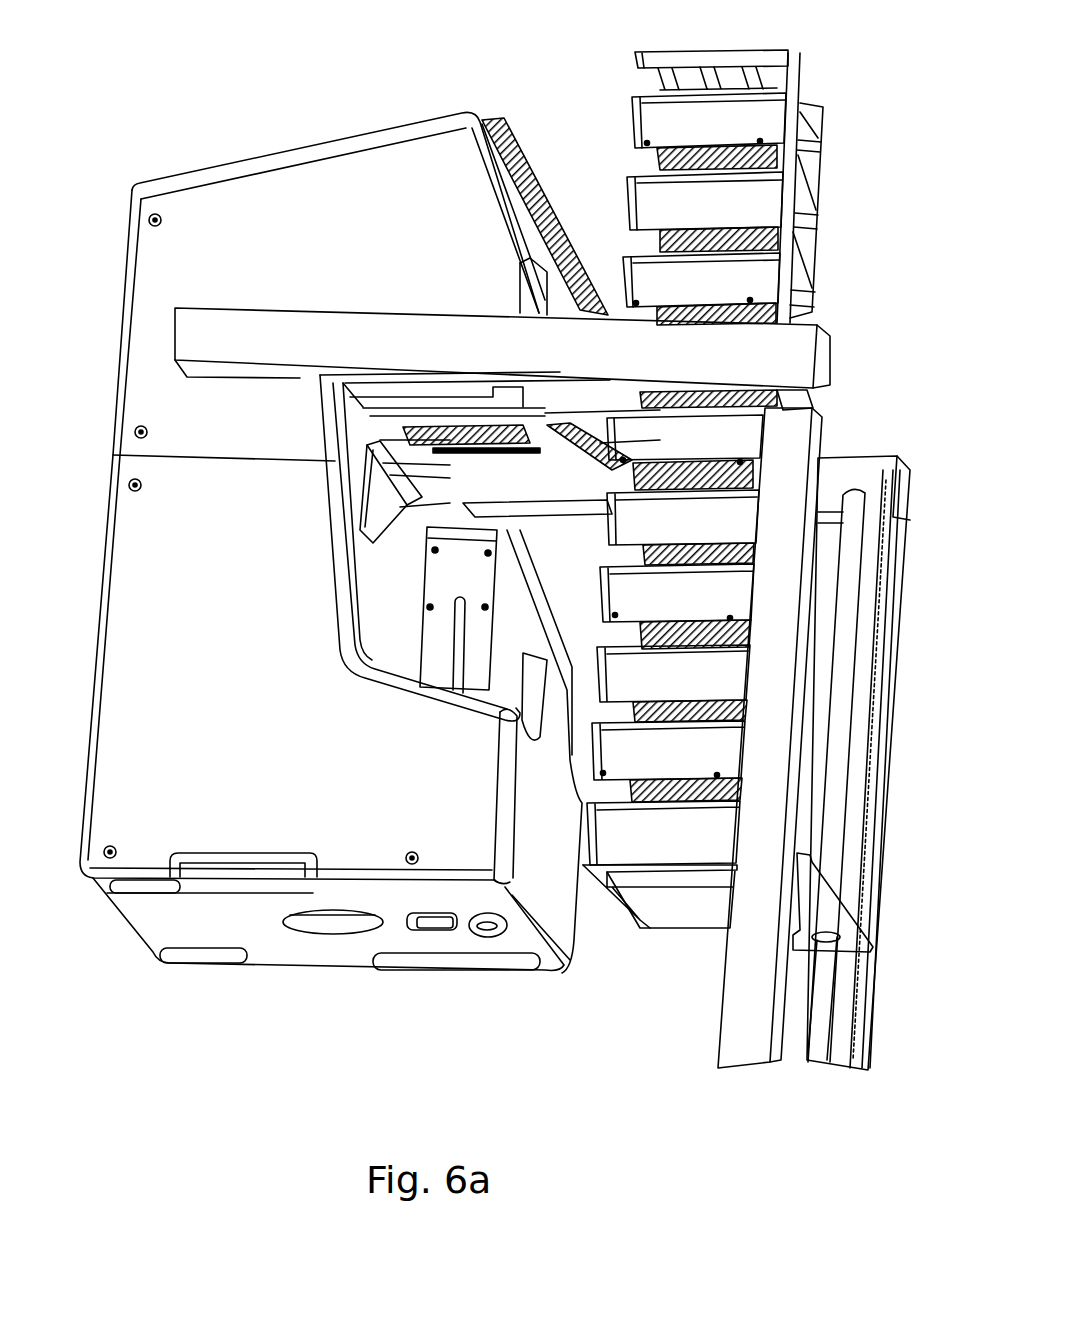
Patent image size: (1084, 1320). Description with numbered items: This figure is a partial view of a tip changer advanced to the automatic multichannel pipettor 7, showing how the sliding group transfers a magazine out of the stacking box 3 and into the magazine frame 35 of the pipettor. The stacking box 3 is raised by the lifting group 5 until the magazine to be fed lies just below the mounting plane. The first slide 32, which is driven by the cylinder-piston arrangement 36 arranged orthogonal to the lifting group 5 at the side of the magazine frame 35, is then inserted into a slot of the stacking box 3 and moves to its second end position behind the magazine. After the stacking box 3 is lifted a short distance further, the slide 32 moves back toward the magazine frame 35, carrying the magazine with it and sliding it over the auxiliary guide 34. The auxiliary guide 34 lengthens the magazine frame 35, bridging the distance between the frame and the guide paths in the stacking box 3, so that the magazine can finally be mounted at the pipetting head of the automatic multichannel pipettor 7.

The stacking box 3 is at (748, 130).
The lifting group 5 is at (755, 968).
The automatic multichannel pipettor 7 is at (230, 758).
The first slide 32 is at (717, 390).
The auxiliary guide 34 is at (527, 390).
The magazine frame 35 is at (560, 432).
The cylinder-piston arrangement 36 is at (272, 342).